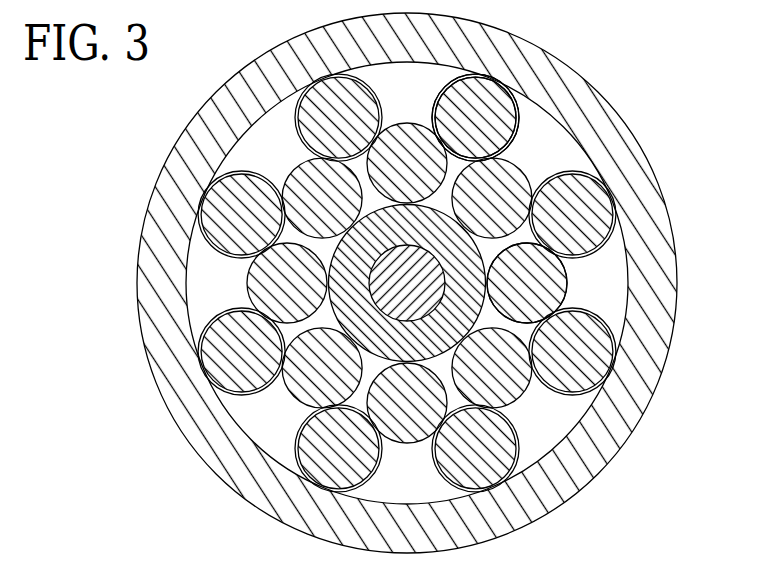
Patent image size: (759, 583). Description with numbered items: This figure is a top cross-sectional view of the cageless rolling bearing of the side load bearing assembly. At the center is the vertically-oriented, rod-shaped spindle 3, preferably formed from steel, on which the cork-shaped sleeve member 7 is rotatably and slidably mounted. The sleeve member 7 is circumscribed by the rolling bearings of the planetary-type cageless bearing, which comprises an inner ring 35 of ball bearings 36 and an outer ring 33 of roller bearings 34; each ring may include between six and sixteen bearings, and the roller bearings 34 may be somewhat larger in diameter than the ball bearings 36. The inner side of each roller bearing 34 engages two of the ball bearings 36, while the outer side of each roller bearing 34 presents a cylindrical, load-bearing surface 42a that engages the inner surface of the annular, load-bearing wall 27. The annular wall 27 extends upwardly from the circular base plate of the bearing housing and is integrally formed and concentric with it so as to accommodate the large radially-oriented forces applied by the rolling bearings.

The spindle 3 is at (400, 294).
The sleeve member 7 is at (417, 236).
The annular wall 27 is at (638, 387).
The outer ring 33 is at (527, 130).
The roller bearings 34 is at (465, 128).
The inner ring 35 is at (575, 285).
The ball bearings 36 is at (515, 292).
The cylindrical load-bearing surface 42a is at (524, 108).